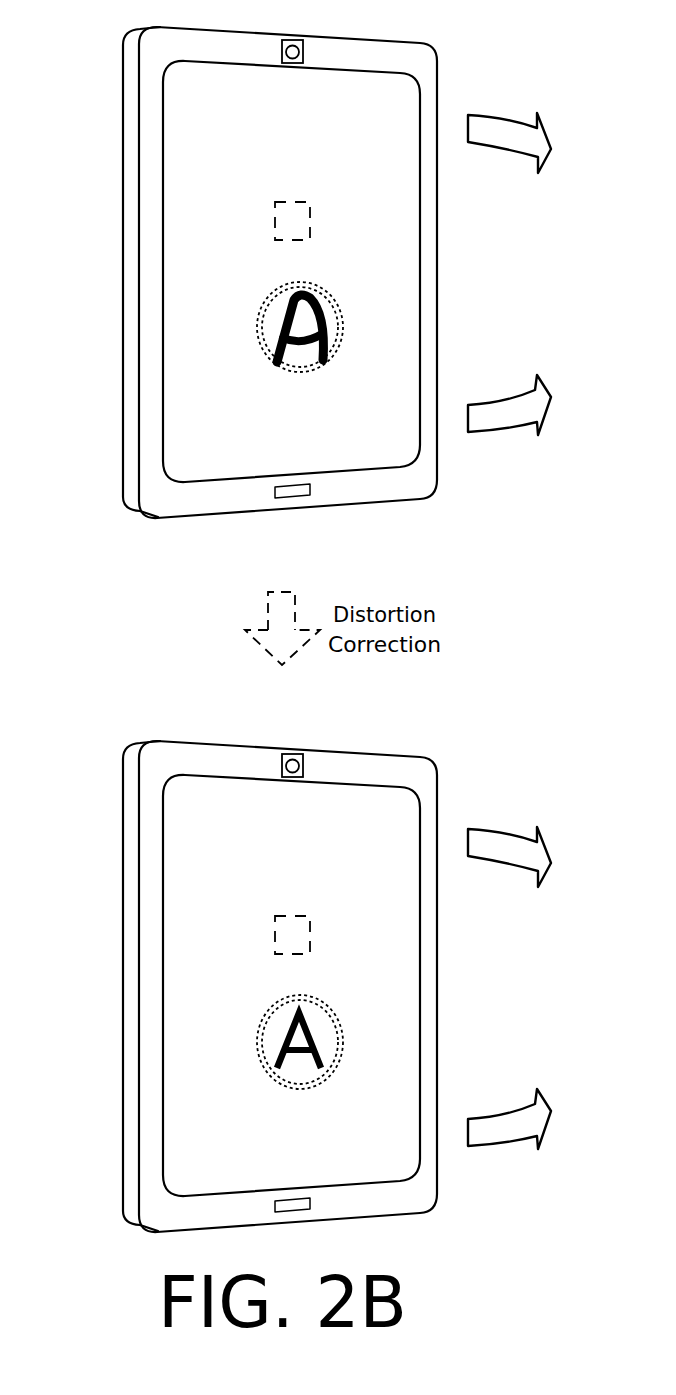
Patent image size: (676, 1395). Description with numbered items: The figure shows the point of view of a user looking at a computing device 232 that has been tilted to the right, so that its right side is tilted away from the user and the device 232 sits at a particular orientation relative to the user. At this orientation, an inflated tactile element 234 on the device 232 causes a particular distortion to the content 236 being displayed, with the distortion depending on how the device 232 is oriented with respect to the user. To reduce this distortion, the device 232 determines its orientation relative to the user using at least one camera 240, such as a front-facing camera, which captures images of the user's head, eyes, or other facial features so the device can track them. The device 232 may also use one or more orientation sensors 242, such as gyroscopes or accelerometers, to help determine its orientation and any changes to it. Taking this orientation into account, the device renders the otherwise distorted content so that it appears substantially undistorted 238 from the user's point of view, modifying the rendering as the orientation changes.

The computing device 232 is at (123, 90).
The camera 240 is at (303, 46).
The orientation sensors 242 is at (309, 212).
The inflated tactile element 234 is at (328, 298).
The content 236 is at (303, 360).
The undistorted content 238 is at (302, 1075).